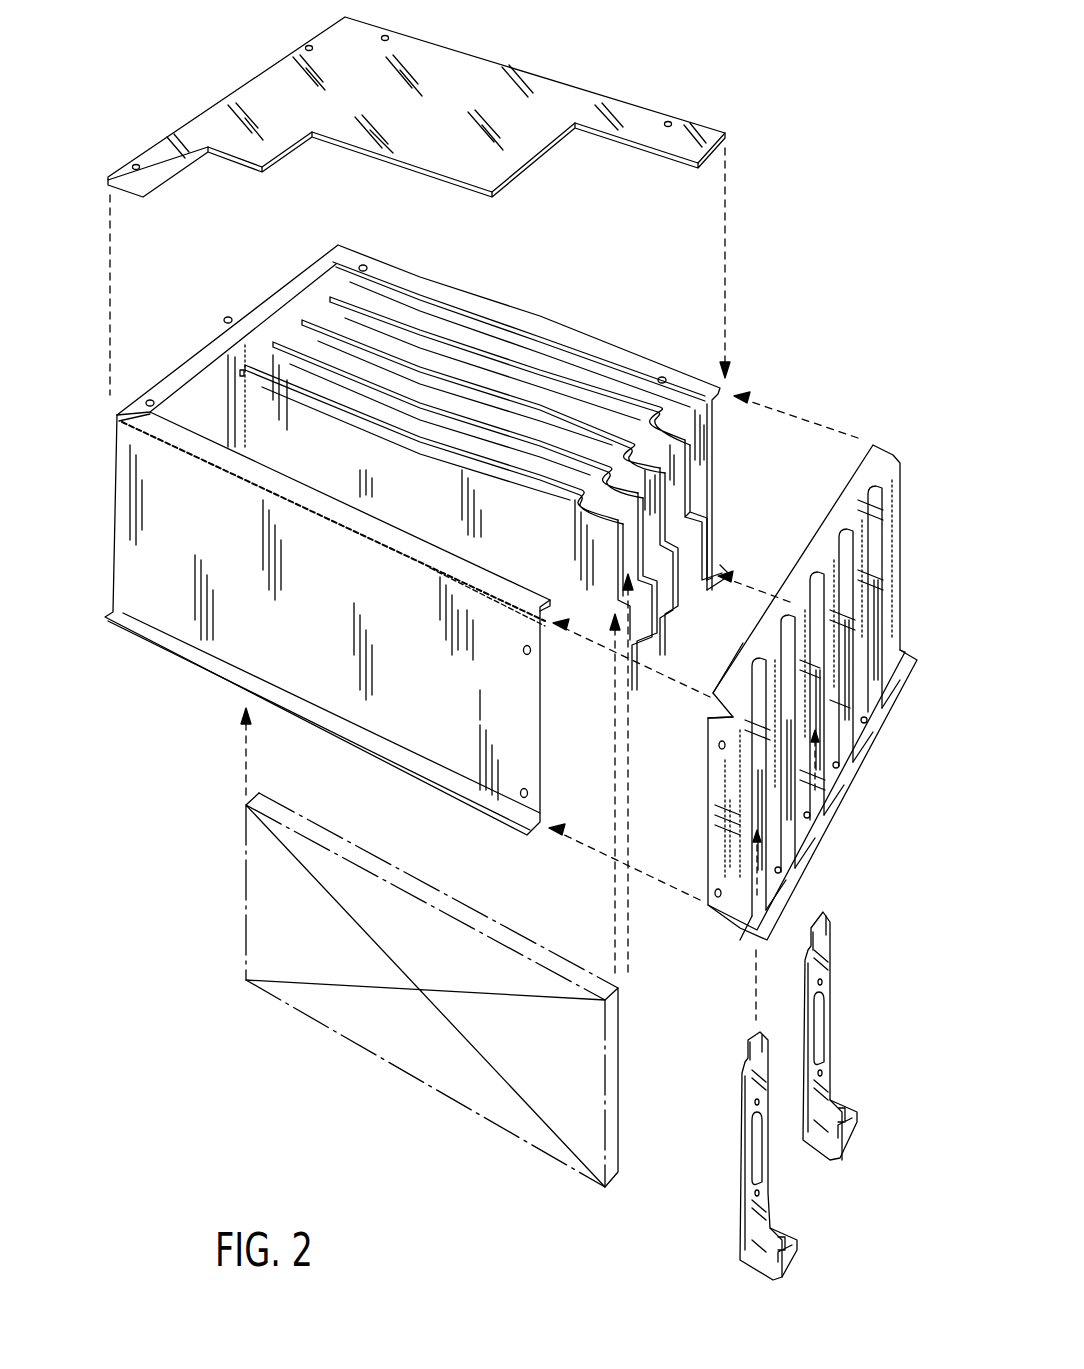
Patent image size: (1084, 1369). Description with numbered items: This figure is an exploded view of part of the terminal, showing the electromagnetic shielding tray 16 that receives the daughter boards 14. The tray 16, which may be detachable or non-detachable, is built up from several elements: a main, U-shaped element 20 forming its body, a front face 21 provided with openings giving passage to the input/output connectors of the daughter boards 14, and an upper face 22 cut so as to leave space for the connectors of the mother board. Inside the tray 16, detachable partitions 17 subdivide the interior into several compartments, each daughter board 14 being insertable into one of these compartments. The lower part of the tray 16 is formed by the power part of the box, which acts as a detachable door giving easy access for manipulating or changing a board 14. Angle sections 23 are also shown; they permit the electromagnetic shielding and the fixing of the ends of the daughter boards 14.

The daughter board 14 is at (250, 930).
The electromagnetic shielding tray 16 is at (820, 140).
The detachable partitions 17 is at (623, 537).
The main U-shaped element 20 is at (252, 657).
The front face 21 is at (890, 478).
The upper face 22 is at (490, 163).
The angle sections 23 is at (767, 1193).